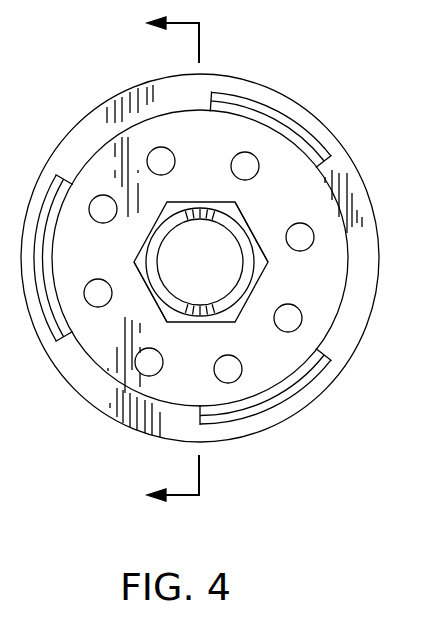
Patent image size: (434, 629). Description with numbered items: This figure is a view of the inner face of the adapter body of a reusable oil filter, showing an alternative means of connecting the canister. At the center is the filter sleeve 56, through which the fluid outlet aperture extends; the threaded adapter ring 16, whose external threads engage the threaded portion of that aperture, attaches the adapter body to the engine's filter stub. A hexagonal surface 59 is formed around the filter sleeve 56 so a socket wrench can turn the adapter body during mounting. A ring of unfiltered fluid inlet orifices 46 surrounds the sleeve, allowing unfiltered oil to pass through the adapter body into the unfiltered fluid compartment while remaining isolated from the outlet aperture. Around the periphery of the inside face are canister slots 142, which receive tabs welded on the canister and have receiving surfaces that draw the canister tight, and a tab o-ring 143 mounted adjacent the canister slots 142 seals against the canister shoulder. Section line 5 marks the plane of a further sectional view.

The section line 5- 5 is at (163, 261).
The threaded adapter ring 16 is at (147, 261).
The unfiltered fluid inlet orifices 46 is at (251, 156).
The filter sleeve 56 is at (163, 207).
The hexagonal surface 59 is at (247, 222).
The canister slots 142 is at (260, 413).
The tab o-ring 143 is at (292, 385).